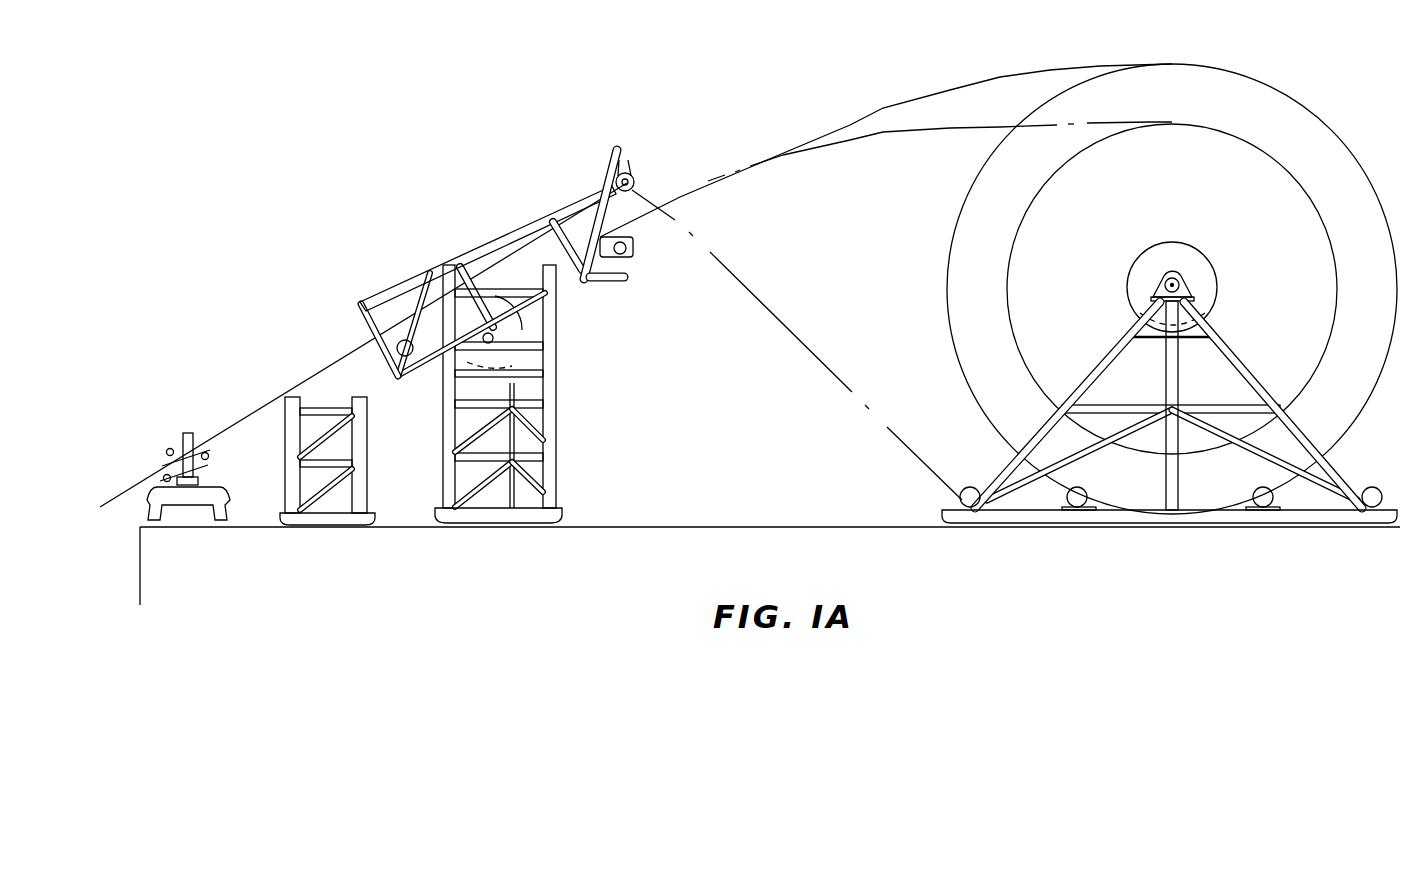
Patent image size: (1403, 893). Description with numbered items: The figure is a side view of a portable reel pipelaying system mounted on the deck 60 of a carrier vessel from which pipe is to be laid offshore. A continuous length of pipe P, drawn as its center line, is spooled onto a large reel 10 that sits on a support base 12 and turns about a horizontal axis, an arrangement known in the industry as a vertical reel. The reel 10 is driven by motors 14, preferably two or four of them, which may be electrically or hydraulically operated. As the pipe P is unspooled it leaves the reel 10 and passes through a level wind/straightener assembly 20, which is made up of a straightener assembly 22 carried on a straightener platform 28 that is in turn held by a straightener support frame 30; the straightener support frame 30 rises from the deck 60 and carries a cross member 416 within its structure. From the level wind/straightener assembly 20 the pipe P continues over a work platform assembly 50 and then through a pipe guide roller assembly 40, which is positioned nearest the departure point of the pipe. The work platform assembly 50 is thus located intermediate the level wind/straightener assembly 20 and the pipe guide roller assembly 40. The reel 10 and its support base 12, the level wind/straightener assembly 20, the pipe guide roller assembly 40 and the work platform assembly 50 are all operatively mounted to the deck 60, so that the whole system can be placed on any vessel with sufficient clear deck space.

The reel 10 is at (1169, 298).
The support base 12 is at (1192, 289).
The motors 14 is at (1187, 522).
The level wind/straightener assembly 20 is at (497, 263).
The straightener assembly 22 is at (575, 181).
The straightener platform 28 is at (540, 313).
The straightener support frame 30 is at (533, 394).
The pipe guide roller assembly 40 is at (187, 458).
The work platform assembly 50 is at (318, 439).
The deck 60 is at (770, 547).
The cross member 416 is at (543, 446).
The pipe P is at (886, 150).